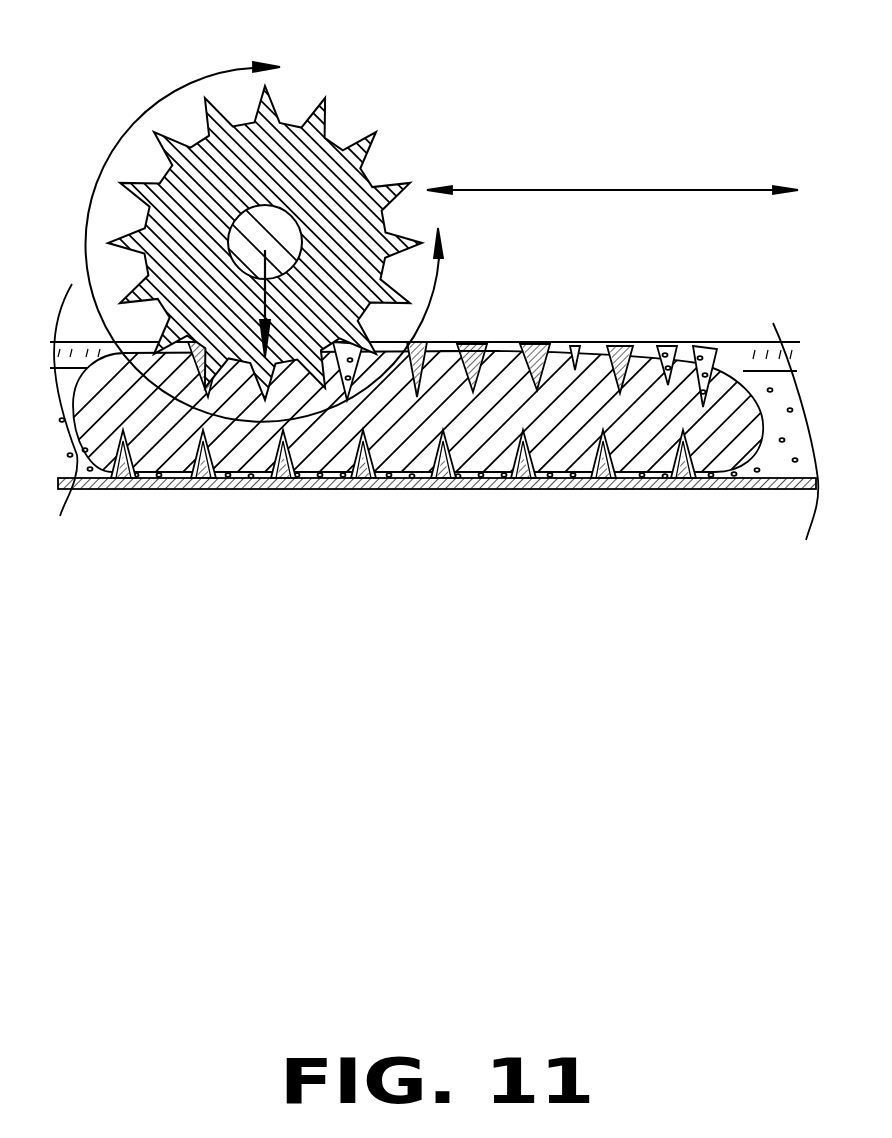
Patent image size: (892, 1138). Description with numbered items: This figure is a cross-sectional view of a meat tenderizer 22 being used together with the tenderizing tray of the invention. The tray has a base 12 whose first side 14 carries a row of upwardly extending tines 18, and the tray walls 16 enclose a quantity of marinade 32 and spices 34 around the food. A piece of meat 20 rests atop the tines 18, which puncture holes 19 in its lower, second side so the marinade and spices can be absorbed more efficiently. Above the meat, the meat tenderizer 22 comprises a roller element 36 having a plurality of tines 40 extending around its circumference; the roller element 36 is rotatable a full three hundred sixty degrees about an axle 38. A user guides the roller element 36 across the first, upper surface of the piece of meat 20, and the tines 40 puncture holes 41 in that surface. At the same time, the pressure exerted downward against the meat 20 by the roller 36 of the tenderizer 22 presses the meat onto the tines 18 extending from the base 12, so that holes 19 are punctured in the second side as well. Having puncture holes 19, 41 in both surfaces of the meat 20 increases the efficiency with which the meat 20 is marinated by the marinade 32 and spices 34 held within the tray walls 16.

The base 12 is at (500, 492).
The first side 14 is at (641, 470).
The tray walls 16 is at (745, 352).
The tines 18 is at (527, 462).
The holes 19 is at (330, 468).
The piece of meat 20 is at (247, 447).
The meat tenderizer 22 is at (461, 131).
The marinade 32 is at (477, 490).
The spices 34 is at (738, 362).
The roller elements 36 is at (243, 162).
The axle 38 is at (197, 193).
The tines 40 is at (323, 133).
The holes 41 is at (466, 352).